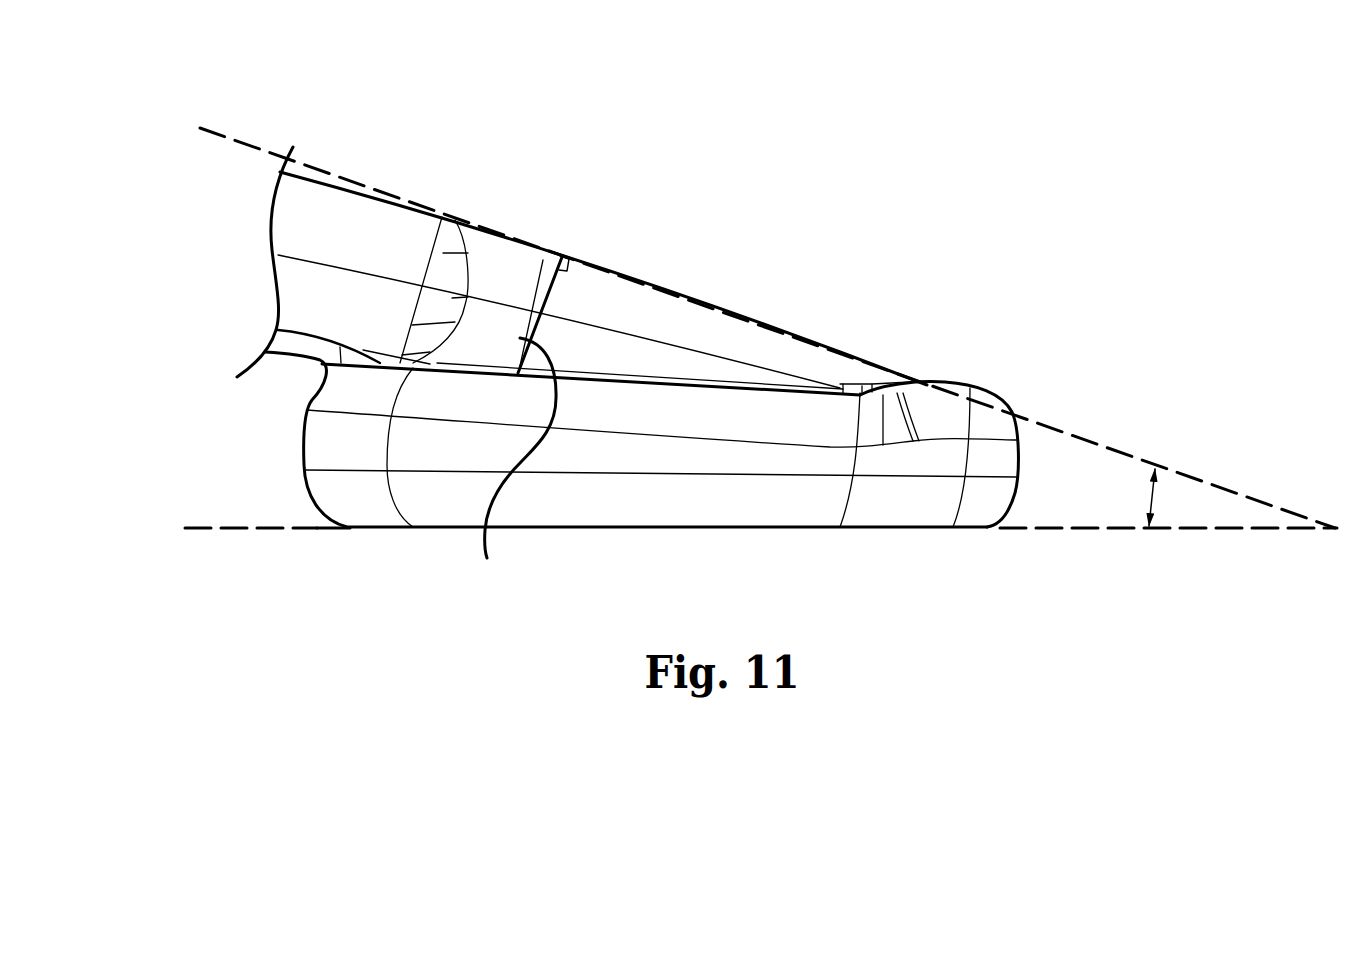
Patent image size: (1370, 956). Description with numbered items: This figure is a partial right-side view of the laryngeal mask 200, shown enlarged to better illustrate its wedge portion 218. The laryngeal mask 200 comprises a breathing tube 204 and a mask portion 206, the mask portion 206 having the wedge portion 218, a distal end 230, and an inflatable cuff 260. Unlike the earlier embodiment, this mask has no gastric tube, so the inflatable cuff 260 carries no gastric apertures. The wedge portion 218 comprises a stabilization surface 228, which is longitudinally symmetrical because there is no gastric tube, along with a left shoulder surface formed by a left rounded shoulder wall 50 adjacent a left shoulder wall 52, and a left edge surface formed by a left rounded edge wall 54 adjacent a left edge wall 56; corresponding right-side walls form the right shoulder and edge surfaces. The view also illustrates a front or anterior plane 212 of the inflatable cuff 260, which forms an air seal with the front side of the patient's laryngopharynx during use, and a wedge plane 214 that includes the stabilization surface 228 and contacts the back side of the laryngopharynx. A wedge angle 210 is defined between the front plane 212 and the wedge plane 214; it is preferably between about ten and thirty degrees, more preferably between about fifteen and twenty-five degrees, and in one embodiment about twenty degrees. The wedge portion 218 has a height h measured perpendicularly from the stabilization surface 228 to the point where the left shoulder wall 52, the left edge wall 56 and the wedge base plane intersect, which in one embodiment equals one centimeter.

The laryngeal mask 200 is at (745, 96).
The breathing tube 204 is at (327, 145).
The mask portion 206 is at (882, 249).
The wedge angle 210 is at (1148, 497).
The front or anterior plane 212 is at (1080, 537).
The wedge plane 214 is at (1097, 443).
The wedge portion 218 is at (606, 226).
The stabilization surface 228 is at (637, 278).
The distal end 230 is at (882, 367).
The left rounded shoulder wall 50 is at (495, 253).
The left shoulder wall 52 is at (500, 330).
The left rounded edge wall 54 is at (663, 317).
The left edge wall 56 is at (707, 367).
The inflatable cuff 260 is at (728, 513).
The height h is at (517, 462).